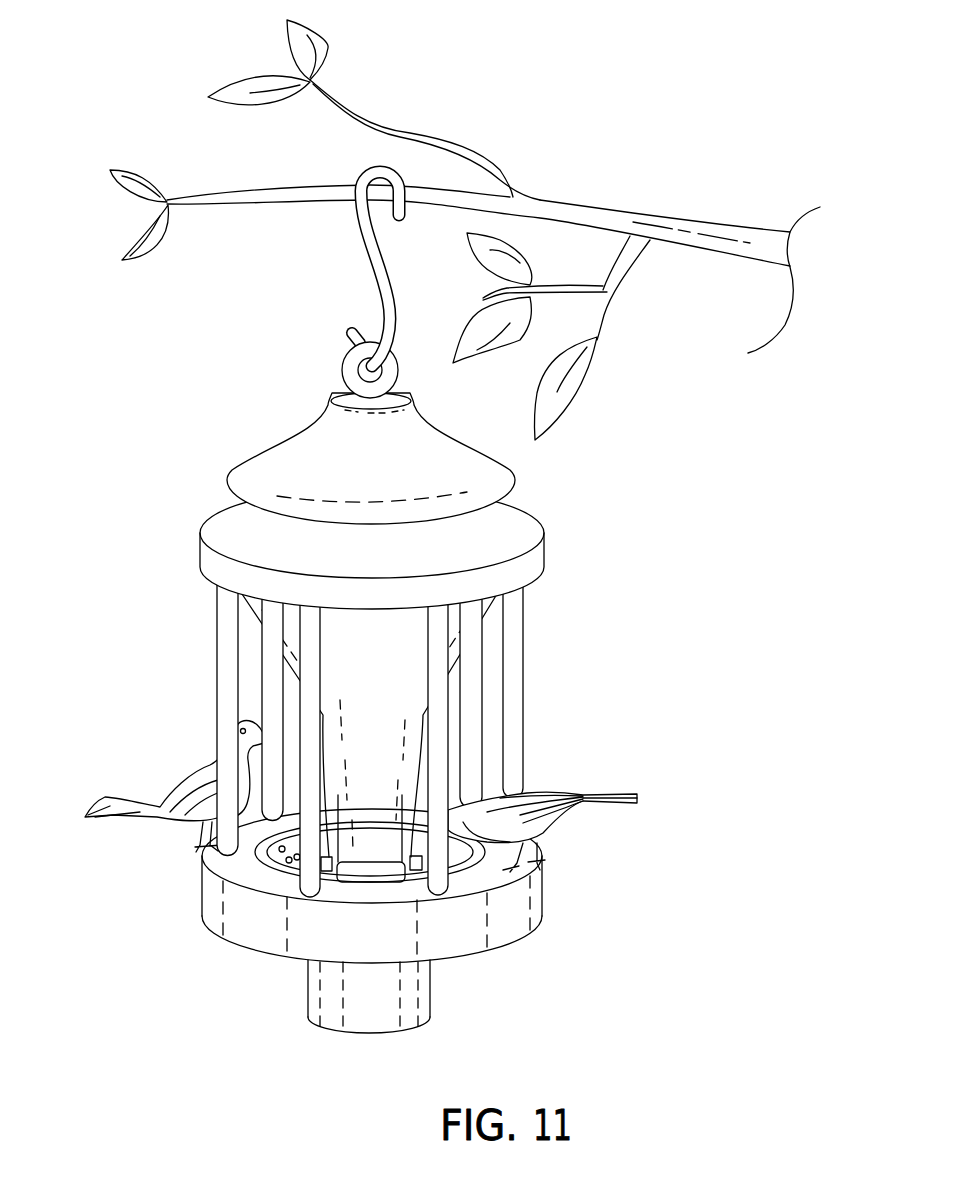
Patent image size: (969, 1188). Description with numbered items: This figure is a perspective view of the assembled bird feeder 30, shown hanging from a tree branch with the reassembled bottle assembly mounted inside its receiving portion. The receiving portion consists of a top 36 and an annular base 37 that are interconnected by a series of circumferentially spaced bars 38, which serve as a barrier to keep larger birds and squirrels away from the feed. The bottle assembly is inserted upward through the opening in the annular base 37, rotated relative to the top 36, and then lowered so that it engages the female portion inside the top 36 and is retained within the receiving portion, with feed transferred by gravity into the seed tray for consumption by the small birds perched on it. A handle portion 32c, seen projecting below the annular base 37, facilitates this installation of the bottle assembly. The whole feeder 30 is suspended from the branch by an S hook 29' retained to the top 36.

The S hook 29' is at (321, 269).
The bird feeder 30 is at (124, 538).
The top 36 is at (268, 450).
The annular base 37 is at (213, 897).
The bars 38 is at (310, 658).
The handle portion 32c is at (327, 992).